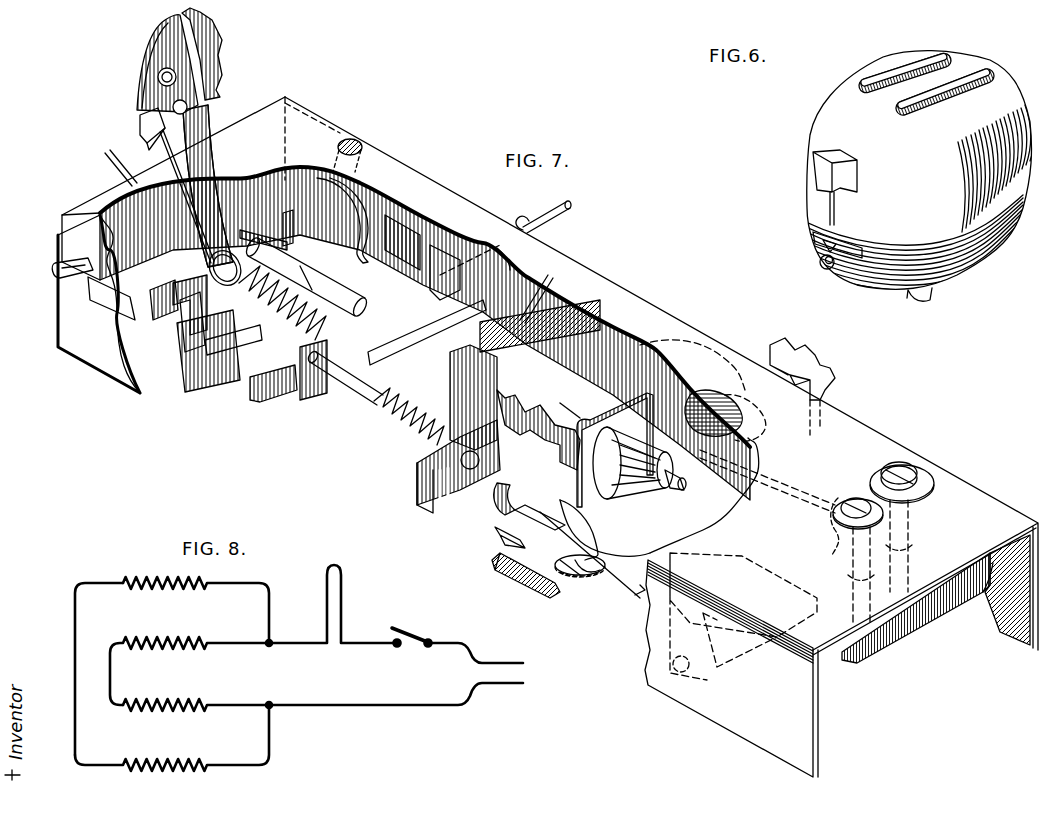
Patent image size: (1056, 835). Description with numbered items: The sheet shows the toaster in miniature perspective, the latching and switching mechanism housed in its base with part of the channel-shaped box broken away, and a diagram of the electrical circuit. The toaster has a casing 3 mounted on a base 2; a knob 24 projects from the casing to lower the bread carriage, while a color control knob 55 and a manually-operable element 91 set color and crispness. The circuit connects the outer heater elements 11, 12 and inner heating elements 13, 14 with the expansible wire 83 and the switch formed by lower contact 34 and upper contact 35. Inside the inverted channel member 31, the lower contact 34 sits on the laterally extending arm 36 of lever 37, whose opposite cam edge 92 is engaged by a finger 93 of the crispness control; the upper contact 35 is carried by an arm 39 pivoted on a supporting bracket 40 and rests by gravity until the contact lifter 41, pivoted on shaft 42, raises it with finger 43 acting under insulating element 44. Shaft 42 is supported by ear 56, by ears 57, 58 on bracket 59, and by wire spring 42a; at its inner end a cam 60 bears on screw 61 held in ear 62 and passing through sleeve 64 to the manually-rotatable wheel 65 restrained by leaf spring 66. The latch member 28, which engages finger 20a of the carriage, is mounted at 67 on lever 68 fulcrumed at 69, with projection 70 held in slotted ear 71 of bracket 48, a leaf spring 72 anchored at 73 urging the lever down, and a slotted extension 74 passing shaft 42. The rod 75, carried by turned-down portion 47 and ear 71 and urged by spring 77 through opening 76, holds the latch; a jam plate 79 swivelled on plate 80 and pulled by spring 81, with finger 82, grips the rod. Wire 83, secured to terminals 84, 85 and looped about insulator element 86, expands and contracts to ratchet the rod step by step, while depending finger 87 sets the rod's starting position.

In FIG. 6, the base 2 is at (925, 300).
In FIG. 6, the casing 3 is at (827, 113).
In FIG. 6, the knob 24 is at (812, 163).
In FIG. 6, the color control knob 55 is at (820, 265).
In FIG. 6, the manually-operable element 91 is at (810, 240).
In FIG. 8, the outer heater element 11 is at (152, 580).
In FIG. 8, the outer heater element 12 is at (163, 762).
In FIG. 8, the inner heating element 13 is at (150, 640).
In FIG. 8, the inner heating element 14 is at (158, 700).
In FIG. 7, the expansible and contractible wire 83 is at (535, 300).
In FIG. 8, the expansible and contractible wire 83 is at (345, 594).
In FIG. 7, the lower contact 34 is at (575, 580).
In FIG. 8, the lower contact 34 is at (398, 648).
In FIG. 7, the upper contact 35 is at (600, 532).
In FIG. 8, the upper contact 35 is at (402, 630).
In FIG. 7, the finger 20a is at (138, 128).
In FIG. 7, the latch member 28 is at (148, 55).
In FIG. 7, the inverted channel member 31 is at (855, 442).
In FIG. 7, the laterally extending arm 36 is at (570, 592).
In FIG. 7, the lever 37 is at (95, 340).
In FIG. 7, the arm 39 is at (620, 612).
In FIG. 7, the supporting bracket 40 is at (770, 570).
In FIG. 7, the contact lifter 41 is at (555, 447).
In FIG. 7, the shaft 42 is at (108, 162).
In FIG. 7, the wire spring 42a is at (555, 222).
In FIG. 7, the finger 43 is at (500, 540).
In FIG. 7, the insulating element 44 is at (505, 500).
In FIG. 7, the turned-down portion 47 is at (420, 480).
In FIG. 7, the bracket 48 is at (225, 380).
In FIG. 7, the ear 56 is at (140, 212).
In FIG. 7, the ear 57 is at (480, 415).
In FIG. 7, the ear 58 is at (575, 432).
In FIG. 7, the bracket 59 is at (560, 340).
In FIG. 7, the cam 60 is at (652, 500).
In FIG. 7, the screw 61 is at (752, 448).
In FIG. 7, the ear 62 is at (760, 425).
In FIG. 7, the sleeve 64 is at (712, 418).
In FIG. 7, the manually-rotatable wheel 65 is at (812, 370).
In FIG. 7, the leaf spring 66 is at (700, 337).
In FIG. 7, the latch mounting 67 is at (230, 245).
In FIG. 7, the lever 68 is at (410, 235).
In FIG. 7, the fulcrum 69 is at (470, 250).
In FIG. 7, the projection 70 is at (195, 355).
In FIG. 7, the slotted ear 71 is at (215, 370).
In FIG. 7, the leaf spring 72 is at (366, 180).
In FIG. 7, the anchor 73 is at (362, 145).
In FIG. 7, the slotted extension 74 is at (285, 225).
In FIG. 7, the rod 75 is at (365, 400).
In FIG. 7, the opening 76 is at (215, 350).
In FIG. 7, the spring 77 is at (430, 440).
In FIG. 7, the jam plate 79 is at (315, 397).
In FIG. 7, the plate 80 is at (400, 368).
In FIG. 7, the spring 81 is at (362, 318).
In FIG. 7, the finger 82 is at (270, 395).
In FIG. 7, the terminal 84 is at (918, 475).
In FIG. 7, the terminal 85 is at (855, 500).
In FIG. 7, the insulator element 86 is at (492, 248).
In FIG. 7, the depending finger 87 is at (158, 307).
In FIG. 7, the cam edge 92 is at (95, 298).
In FIG. 7, the finger 93 is at (58, 265).